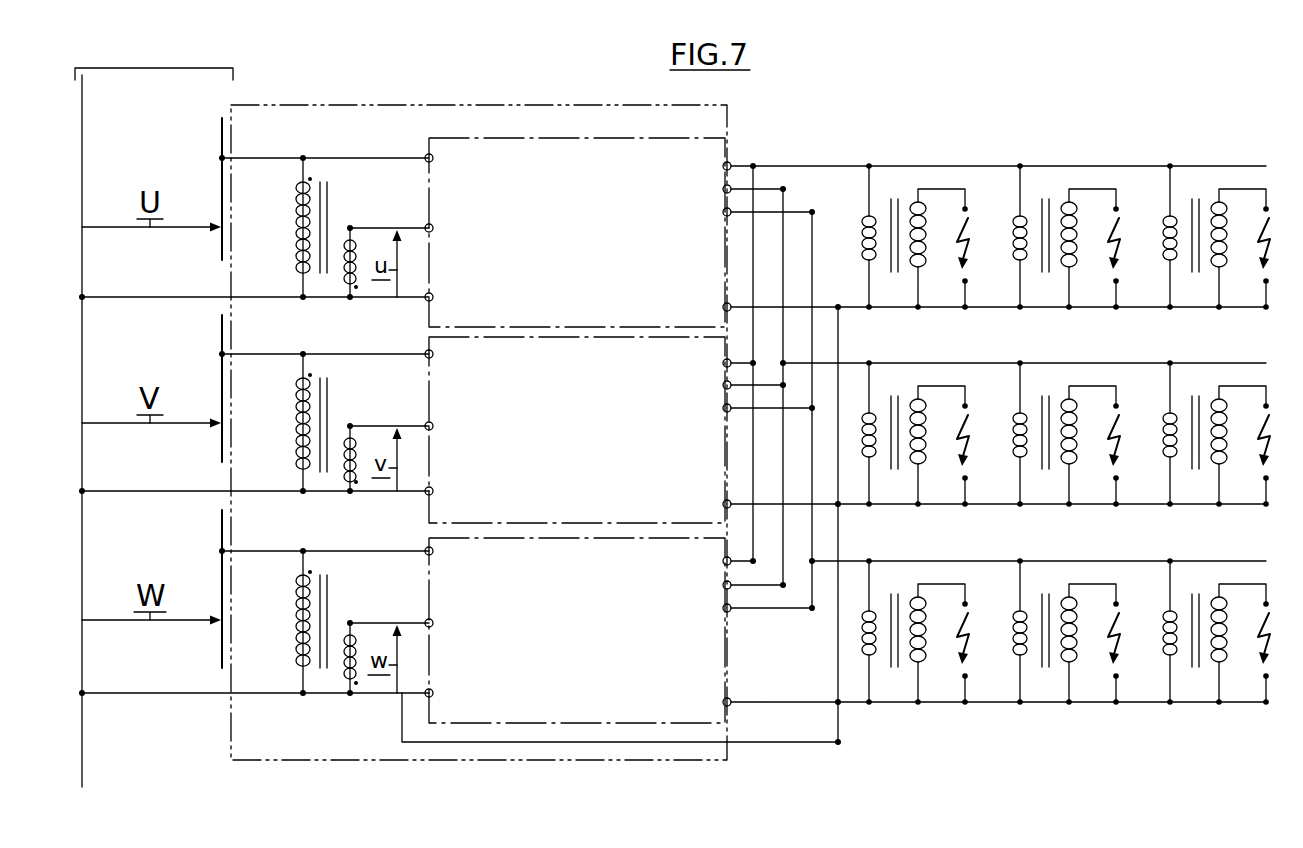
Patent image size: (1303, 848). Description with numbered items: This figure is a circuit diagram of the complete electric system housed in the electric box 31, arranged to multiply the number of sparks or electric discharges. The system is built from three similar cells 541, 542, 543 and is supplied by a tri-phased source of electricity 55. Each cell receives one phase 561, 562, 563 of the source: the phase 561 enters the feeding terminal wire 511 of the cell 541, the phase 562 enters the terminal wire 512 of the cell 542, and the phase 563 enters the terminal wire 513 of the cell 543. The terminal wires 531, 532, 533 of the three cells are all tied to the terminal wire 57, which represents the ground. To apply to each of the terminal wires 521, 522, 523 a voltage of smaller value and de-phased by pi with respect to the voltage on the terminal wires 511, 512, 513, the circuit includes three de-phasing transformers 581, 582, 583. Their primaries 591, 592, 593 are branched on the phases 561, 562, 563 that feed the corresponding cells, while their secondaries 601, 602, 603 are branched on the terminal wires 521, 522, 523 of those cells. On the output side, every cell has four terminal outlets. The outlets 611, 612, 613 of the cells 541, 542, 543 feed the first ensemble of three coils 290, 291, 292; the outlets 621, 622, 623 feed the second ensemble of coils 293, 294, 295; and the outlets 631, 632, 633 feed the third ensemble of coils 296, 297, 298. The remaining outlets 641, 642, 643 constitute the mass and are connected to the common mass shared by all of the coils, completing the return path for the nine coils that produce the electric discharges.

The tri-phased source of electricity 55 is at (154, 68).
The terminal wire representing the ground 57 is at (84, 745).
The electric box 31 is at (677, 760).
The phase 561 is at (220, 130).
The phase 562 is at (220, 338).
The phase 563 is at (220, 534).
The primary of de-phasing transformer 591 is at (298, 223).
The primary of de-phasing transformer 592 is at (297, 440).
The primary of de-phasing transformer 593 is at (297, 636).
The de-phasing transformer 581 is at (337, 212).
The de-phasing transformer 582 is at (337, 409).
The de-phasing transformer 583 is at (337, 605).
The secondary of de-phasing transformer 601 is at (354, 250).
The secondary of de-phasing transformer 602 is at (355, 447).
The secondary of de-phasing transformer 603 is at (355, 646).
The feeding terminal wire 511 is at (433, 159).
The terminal wire 521 is at (433, 228).
The terminal wire 531 is at (433, 296).
The terminal wire 512 is at (433, 355).
The terminal wire 522 is at (433, 426).
The terminal wire 532 is at (433, 490).
The terminal wire 513 is at (433, 552).
The terminal wire 523 is at (433, 623).
The terminal wire 533 is at (433, 692).
The cell 541 is at (592, 243).
The cell 542 is at (592, 441).
The cell 543 is at (592, 638).
The terminal outlet 611 is at (723, 164).
The terminal outlet 621 is at (723, 189).
The terminal outlet 631 is at (723, 214).
The terminal wire constituting the mass 641 is at (723, 307).
The terminal outlet 612 is at (723, 361).
The terminal outlet 622 is at (723, 385).
The terminal outlet 632 is at (723, 410).
The terminal wire constituting the mass 642 is at (723, 504).
The terminal outlet 613 is at (723, 559).
The terminal outlet 623 is at (723, 585).
The terminal outlet 633 is at (723, 610).
The terminal wire constituting the mass 643 is at (723, 702).
The coil 290 is at (898, 190).
The coil 291 is at (1049, 190).
The coil 292 is at (1199, 190).
The coil 293 is at (898, 386).
The coil 294 is at (1049, 386).
The coil 295 is at (1199, 386).
The coil 296 is at (898, 585).
The coil 297 is at (1049, 585).
The coil 298 is at (1199, 585).